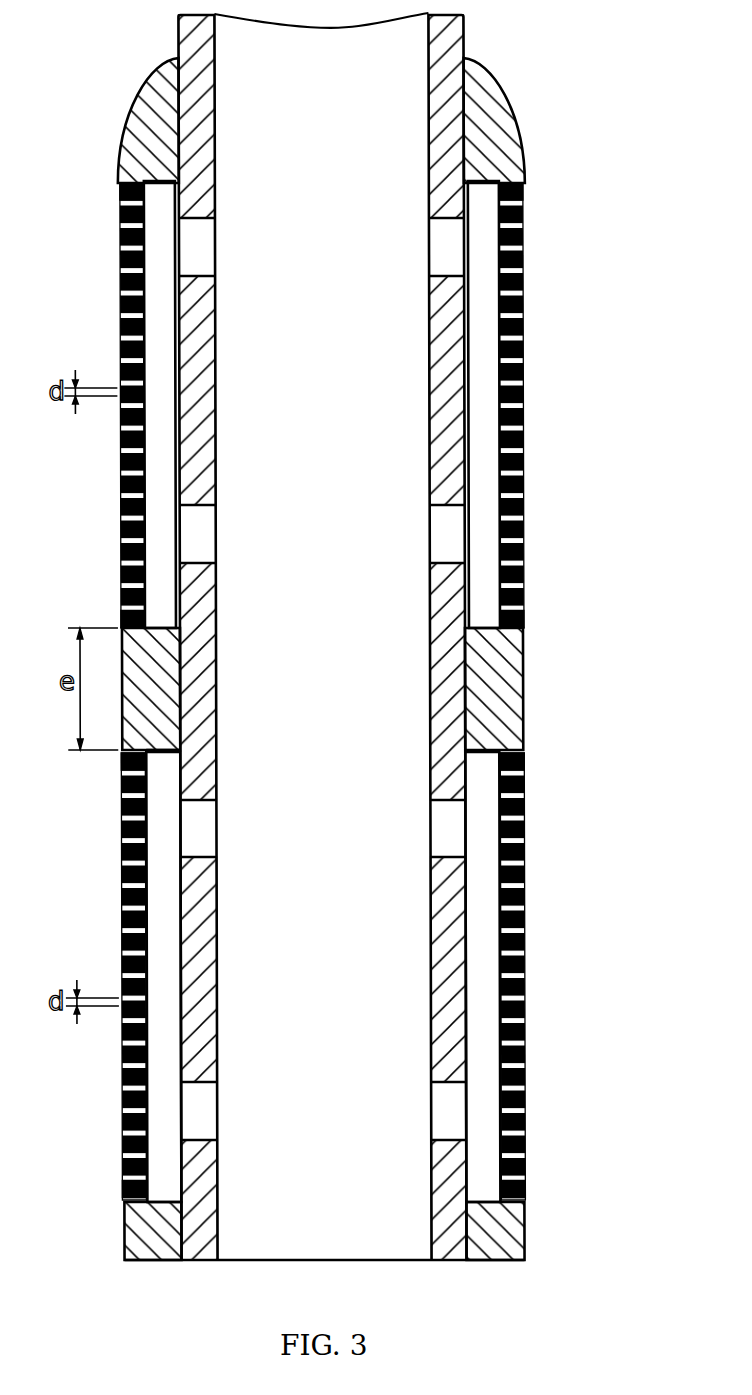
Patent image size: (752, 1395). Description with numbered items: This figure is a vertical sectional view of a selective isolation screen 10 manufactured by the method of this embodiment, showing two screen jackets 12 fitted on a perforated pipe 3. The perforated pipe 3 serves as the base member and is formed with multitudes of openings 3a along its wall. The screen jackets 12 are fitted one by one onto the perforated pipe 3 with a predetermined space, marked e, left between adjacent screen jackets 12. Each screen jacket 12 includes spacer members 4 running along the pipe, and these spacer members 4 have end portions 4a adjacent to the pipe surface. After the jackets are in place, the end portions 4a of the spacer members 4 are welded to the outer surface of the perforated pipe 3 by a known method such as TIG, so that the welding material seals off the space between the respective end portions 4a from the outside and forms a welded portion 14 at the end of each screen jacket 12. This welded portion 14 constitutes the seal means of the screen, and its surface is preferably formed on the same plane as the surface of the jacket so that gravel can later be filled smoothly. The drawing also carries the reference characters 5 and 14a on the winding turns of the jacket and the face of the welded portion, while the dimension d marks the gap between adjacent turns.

The perforated pipe 3 is at (180, 42).
The openings 3a is at (192, 241).
The spacer members 4 is at (154, 448).
The end portions 4a is at (150, 185).
The coil wire turns 5 is at (121, 270).
The screen 10 is at (573, 80).
The screen jackets 12 is at (540, 363).
The welded portion 14 is at (158, 168).
The flange face 14a is at (178, 792).